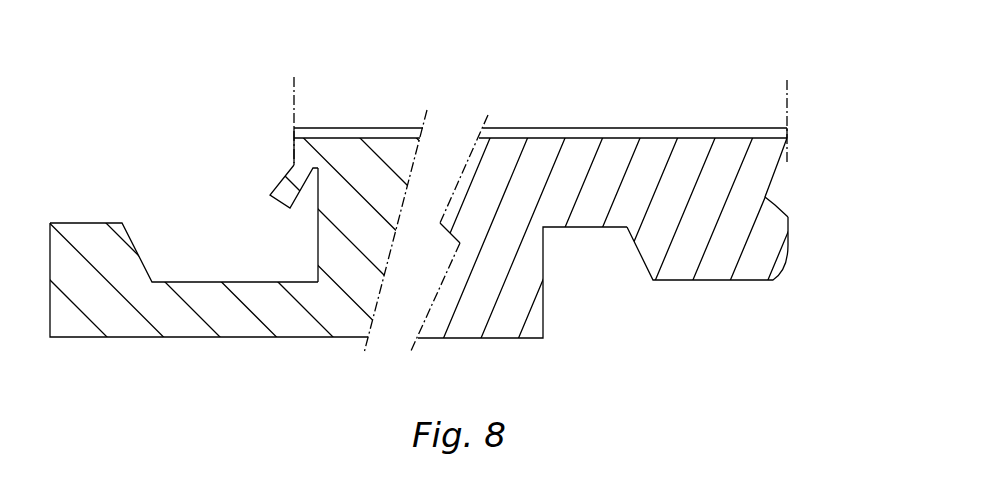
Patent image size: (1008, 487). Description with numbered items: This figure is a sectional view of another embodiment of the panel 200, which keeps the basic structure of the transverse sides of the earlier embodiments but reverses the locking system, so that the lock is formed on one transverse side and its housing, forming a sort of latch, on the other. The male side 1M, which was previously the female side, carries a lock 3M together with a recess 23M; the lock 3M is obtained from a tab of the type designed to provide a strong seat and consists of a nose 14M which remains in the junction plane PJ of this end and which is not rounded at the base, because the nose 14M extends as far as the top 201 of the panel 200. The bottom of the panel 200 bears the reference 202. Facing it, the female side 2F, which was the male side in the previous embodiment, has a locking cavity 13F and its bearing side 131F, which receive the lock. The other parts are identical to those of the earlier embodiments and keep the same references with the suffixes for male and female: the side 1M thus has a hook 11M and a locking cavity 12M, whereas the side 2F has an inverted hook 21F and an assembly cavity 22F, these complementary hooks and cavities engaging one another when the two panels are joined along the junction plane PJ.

The panel 200 is at (580, 66).
The male transverse side 1M is at (150, 135).
The hook 11M is at (118, 291).
The locking cavity 12M is at (205, 233).
The nose 14M is at (293, 147).
The lock 3M is at (292, 176).
The recess 23M is at (309, 245).
The top of the panel 201 is at (369, 128).
The bottom of the panel 202 is at (248, 340).
The female transverse side 2F is at (805, 130).
The locking cavity 13F is at (779, 178).
The bearing side 131F is at (777, 204).
The inverted hook 21F is at (730, 255).
The assembly cavity 22F is at (622, 290).
The junction plane PJ is at (555, 112).